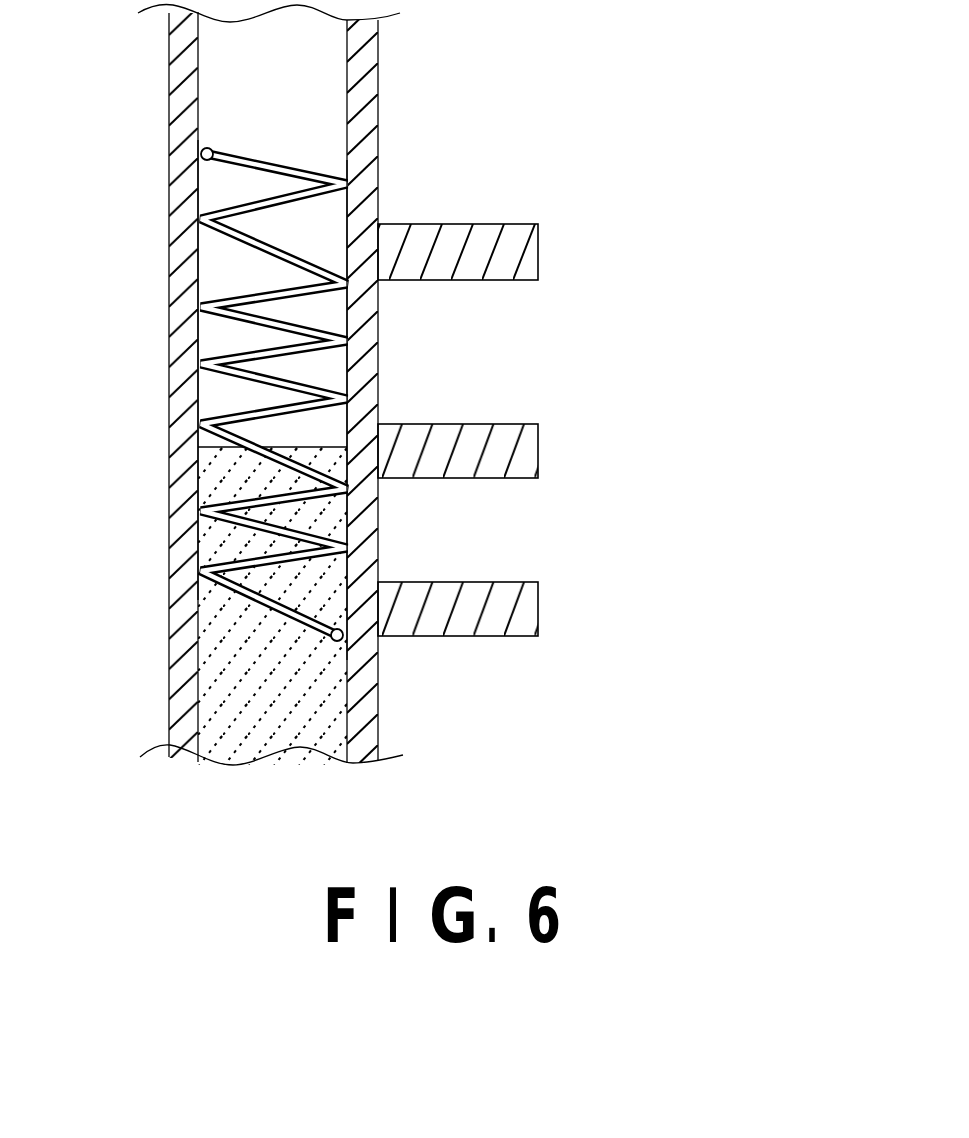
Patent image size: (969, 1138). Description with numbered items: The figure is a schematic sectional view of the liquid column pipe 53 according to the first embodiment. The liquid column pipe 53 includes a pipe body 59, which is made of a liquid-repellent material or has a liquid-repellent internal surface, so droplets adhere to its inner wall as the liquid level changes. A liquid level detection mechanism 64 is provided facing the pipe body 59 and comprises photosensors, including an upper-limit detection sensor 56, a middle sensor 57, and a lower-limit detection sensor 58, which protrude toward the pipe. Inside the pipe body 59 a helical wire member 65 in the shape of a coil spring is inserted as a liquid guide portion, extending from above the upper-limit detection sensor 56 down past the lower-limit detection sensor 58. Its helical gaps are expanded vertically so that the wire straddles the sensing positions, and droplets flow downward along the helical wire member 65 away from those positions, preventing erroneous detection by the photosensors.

The liquid column pipe 53 is at (547, 145).
The upper-limit detection sensor 56 is at (538, 248).
The second projection 57 is at (538, 447).
The lower-limit detection sensor 58 is at (538, 602).
The pipe body 59 is at (380, 155).
The liquid level detection mechanism 64 is at (735, 483).
The helical wire member 65 is at (207, 196).